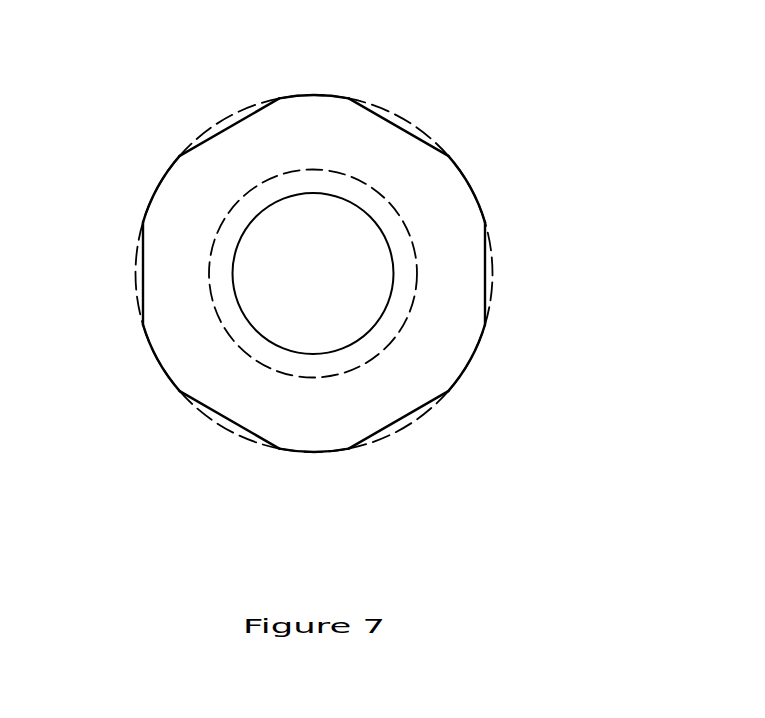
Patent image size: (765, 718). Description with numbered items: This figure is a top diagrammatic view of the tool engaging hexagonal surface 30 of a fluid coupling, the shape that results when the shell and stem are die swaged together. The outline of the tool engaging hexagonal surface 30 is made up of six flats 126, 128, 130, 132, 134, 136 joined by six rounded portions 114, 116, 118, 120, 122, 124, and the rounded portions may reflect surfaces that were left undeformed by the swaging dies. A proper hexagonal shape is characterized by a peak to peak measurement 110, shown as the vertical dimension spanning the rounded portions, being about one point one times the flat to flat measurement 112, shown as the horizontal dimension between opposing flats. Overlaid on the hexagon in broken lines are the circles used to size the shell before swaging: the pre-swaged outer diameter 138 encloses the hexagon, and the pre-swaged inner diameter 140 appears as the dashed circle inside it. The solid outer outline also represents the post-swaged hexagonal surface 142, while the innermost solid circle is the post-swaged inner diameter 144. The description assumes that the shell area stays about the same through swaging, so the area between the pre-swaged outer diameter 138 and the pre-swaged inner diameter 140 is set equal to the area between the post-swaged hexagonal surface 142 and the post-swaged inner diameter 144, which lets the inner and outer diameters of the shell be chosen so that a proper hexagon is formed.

The tool engaging hexagonal surface 30 is at (548, 56).
The peak to peak measurement 110 is at (310, 94).
The flat to flat measurement 112 is at (143, 326).
The rounded portion 114 is at (307, 95).
The rounded portion 116 is at (478, 193).
The rounded portion 118 is at (472, 355).
The rounded portion 120 is at (336, 453).
The rounded portion 122 is at (155, 362).
The rounded portion 124 is at (153, 187).
The flat 126 is at (200, 143).
The flat 128 is at (427, 136).
The flat 130 is at (487, 269).
The flat 132 is at (396, 420).
The flat 134 is at (228, 422).
The flat 136 is at (143, 275).
The pre-swaged outer diameter 138 is at (255, 104).
The pre-swaged inner diameter 140 is at (410, 238).
The post-swaged hexagonal surface 142 is at (371, 106).
The post-swaged inner diameter 144 is at (393, 287).